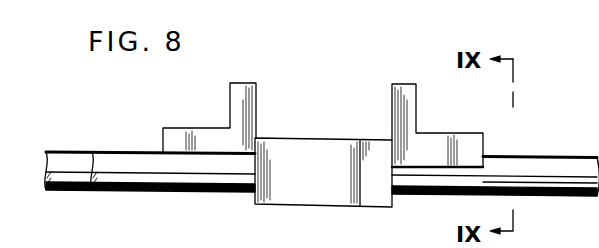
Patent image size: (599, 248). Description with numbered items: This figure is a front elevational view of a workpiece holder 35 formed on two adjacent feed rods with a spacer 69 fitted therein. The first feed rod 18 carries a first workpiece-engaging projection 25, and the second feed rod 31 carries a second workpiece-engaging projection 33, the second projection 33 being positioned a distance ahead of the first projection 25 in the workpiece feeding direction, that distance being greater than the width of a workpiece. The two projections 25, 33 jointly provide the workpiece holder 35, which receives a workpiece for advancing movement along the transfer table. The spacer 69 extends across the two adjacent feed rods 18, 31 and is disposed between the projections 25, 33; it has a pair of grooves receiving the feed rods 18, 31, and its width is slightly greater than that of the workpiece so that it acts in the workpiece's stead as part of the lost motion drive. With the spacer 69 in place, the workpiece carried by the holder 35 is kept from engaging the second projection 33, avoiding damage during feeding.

The first feed rod 18 is at (70, 158).
The first workpiece-engaging projection 25 is at (238, 92).
The second feed rod 31 is at (534, 168).
The second workpiece-engaging projection 33 is at (437, 119).
The workpiece holder 35 is at (323, 103).
The spacer 69 is at (313, 207).